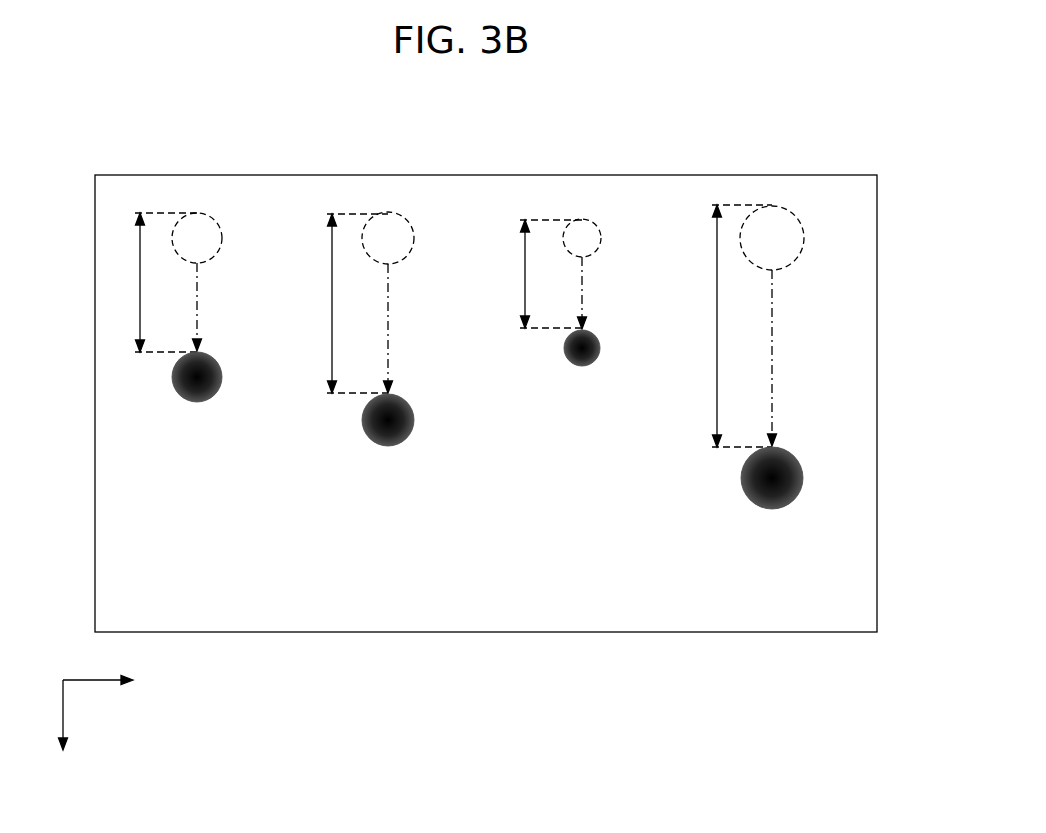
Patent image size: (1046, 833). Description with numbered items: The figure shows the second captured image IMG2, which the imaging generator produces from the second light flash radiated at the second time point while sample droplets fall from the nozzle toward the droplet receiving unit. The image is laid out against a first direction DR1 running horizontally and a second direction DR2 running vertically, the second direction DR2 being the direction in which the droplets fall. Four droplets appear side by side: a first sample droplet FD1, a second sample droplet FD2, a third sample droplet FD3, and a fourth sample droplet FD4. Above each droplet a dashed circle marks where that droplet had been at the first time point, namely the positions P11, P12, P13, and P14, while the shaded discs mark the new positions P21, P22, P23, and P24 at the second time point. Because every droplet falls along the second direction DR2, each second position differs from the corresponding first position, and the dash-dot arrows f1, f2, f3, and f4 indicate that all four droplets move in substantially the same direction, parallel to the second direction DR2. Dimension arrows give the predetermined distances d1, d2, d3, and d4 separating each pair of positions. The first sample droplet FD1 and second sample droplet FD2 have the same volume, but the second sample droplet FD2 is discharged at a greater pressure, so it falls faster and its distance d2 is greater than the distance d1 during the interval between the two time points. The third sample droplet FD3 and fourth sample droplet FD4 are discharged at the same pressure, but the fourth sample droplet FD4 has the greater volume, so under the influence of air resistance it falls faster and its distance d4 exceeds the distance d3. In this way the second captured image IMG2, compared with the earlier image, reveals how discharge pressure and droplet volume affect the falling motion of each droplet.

The second captured image IMG2 is at (780, 130).
The position of the first sample droplet at the first time point P11 is at (197, 238).
The position of the second sample droplet at the first time point P12 is at (388, 238).
The position of the third sample droplet at the first time point P13 is at (582, 238).
The position of the fourth sample droplet at the first time point P14 is at (772, 238).
The first sample droplet FD1 is at (218, 431).
The second sample droplet FD2 is at (409, 473).
The third sample droplet FD3 is at (604, 402).
The fourth sample droplet FD4 is at (794, 527).
The position of the first sample droplet at the second time point P21 is at (217, 397).
The position of the second sample droplet at the second time point P22 is at (408, 445).
The position of the third sample droplet at the second time point P23 is at (598, 367).
The position of the fourth sample droplet at the second time point P24 is at (800, 498).
The predetermined distance of the first sample droplet d1 is at (155, 282).
The predetermined distance of the second sample droplet d2 is at (346, 303).
The predetermined distance of the third sample droplet d3 is at (539, 274).
The predetermined distance of the fourth sample droplet d4 is at (730, 326).
The falling direction of the first sample droplet f1 is at (211, 307).
The falling direction of the second sample droplet f2 is at (403, 328).
The falling direction of the third sample droplet f3 is at (597, 293).
The falling direction of the fourth sample droplet f4 is at (787, 358).
The first direction DR1 is at (121, 681).
The second direction DR2 is at (63, 730).